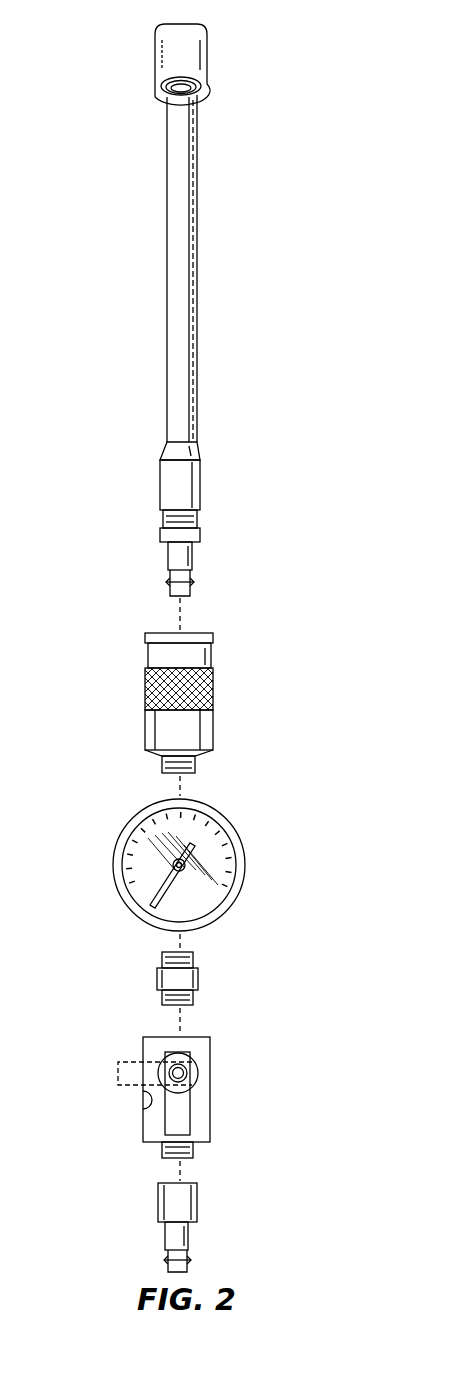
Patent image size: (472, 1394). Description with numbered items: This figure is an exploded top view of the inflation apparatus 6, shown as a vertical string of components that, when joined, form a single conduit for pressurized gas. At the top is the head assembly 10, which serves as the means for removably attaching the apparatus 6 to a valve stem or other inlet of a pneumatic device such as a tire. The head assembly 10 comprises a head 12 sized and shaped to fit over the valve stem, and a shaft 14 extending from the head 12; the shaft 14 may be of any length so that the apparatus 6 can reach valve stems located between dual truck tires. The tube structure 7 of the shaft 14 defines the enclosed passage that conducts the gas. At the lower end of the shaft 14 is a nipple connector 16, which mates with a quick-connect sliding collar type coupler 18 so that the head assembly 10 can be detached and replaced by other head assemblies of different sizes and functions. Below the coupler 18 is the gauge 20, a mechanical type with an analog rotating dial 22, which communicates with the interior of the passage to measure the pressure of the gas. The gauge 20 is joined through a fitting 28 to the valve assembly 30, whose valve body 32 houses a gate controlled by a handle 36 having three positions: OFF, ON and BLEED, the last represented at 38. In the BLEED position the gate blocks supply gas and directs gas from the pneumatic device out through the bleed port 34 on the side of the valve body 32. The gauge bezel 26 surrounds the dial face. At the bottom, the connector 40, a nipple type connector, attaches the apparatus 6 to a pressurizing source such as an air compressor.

The apparatus 6 is at (110, 378).
The tube structure 7 is at (193, 415).
The head assembly 10 is at (130, 40).
The head 12 is at (170, 60).
The shaft 14 is at (175, 190).
The nipple connector 16 is at (175, 556).
The quick-connect sliding collar type coupler 18 is at (145, 732).
The gauge 20 is at (103, 828).
The rotating dial 22 is at (163, 893).
The gauge bezel 26 is at (120, 855).
The connector fitting 28 is at (157, 982).
The valve assembly 30 is at (106, 1039).
The valve body 32 is at (150, 1123).
The bleed port 34 is at (143, 1100).
The handle 36 is at (183, 1120).
The BLEED position 38 is at (118, 1073).
The connector 40 is at (170, 1240).